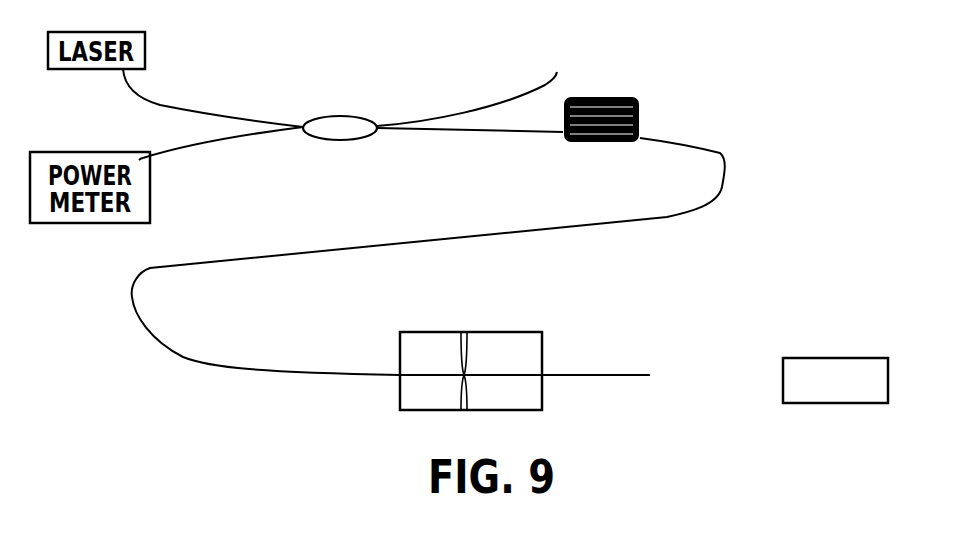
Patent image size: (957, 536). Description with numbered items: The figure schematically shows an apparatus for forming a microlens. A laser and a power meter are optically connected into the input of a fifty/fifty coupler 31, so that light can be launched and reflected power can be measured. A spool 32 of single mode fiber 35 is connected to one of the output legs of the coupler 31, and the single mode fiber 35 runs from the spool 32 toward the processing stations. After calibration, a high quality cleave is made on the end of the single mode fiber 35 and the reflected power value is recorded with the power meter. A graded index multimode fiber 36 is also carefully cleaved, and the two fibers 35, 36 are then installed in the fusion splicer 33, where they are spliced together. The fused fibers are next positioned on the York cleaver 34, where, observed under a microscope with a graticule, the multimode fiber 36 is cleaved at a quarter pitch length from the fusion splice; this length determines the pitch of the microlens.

The 50/50 coupler 31 is at (357, 116).
The spool 32 is at (642, 118).
The fusion splicer 33 is at (528, 332).
The cleaver 34 is at (798, 358).
The single mode fiber 35 is at (720, 153).
The graded index multimode fiber 36 is at (620, 375).